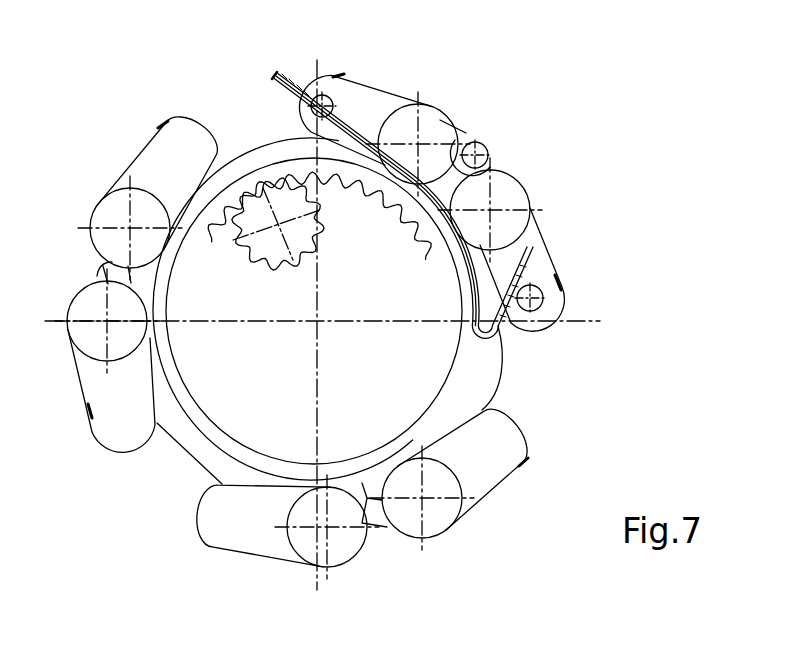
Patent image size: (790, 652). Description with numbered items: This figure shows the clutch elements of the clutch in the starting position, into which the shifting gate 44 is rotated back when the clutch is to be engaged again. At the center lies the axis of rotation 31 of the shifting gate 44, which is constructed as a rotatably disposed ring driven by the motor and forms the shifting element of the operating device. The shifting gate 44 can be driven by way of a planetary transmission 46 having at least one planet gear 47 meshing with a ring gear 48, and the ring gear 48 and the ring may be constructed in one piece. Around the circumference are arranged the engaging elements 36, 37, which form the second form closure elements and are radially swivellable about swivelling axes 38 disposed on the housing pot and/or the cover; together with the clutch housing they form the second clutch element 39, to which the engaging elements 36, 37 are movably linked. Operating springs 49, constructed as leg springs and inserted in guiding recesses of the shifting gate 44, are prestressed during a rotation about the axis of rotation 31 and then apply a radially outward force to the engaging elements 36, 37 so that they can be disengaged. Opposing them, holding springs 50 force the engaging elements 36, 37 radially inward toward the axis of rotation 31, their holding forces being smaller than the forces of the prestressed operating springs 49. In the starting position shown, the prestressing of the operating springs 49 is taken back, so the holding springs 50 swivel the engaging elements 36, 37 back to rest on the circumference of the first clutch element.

The axis of rotation 31 is at (322, 326).
The engaging element 36 is at (177, 143).
The engaging element 37 is at (375, 103).
The swivelling axis 38 is at (104, 318).
The second clutch element 39 is at (540, 177).
The shifting gate 44 is at (468, 366).
The planetary transmission 46 is at (262, 166).
The planet gear 47 is at (320, 228).
The ring gear 48 is at (208, 428).
The operating spring 49 is at (284, 80).
The holding spring 50 is at (338, 74).